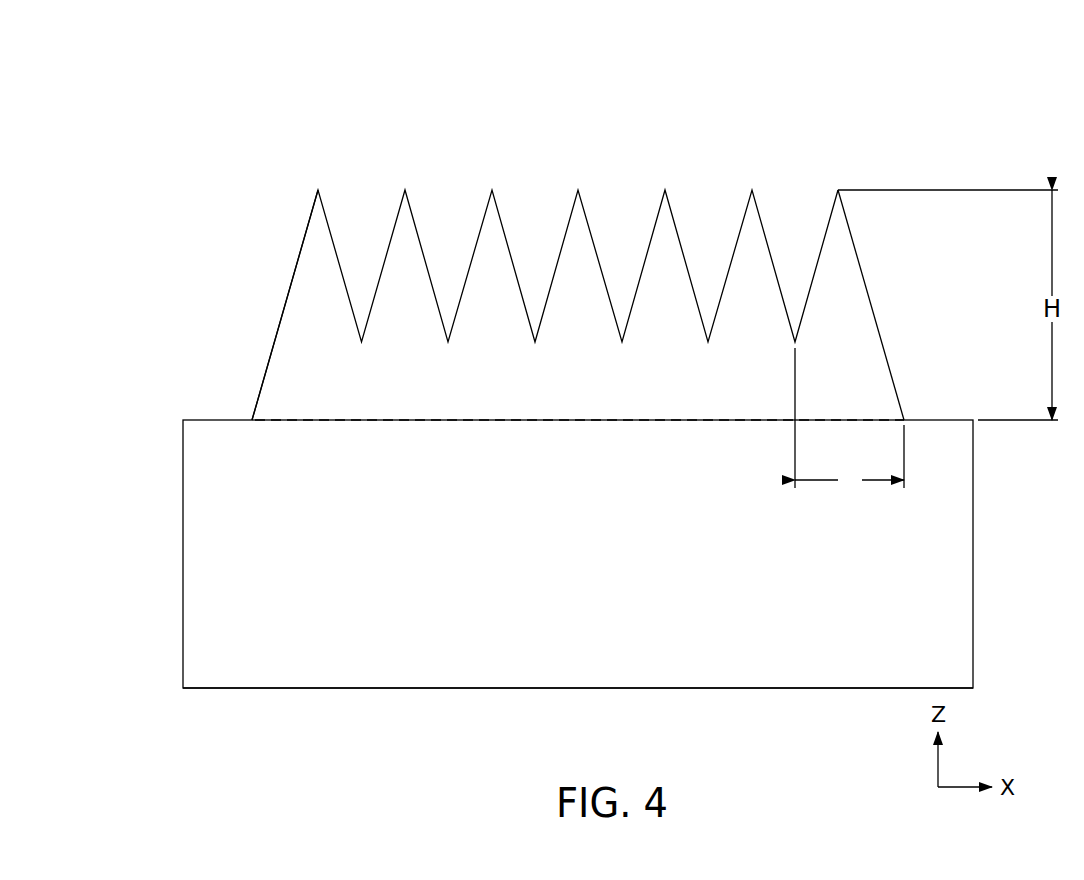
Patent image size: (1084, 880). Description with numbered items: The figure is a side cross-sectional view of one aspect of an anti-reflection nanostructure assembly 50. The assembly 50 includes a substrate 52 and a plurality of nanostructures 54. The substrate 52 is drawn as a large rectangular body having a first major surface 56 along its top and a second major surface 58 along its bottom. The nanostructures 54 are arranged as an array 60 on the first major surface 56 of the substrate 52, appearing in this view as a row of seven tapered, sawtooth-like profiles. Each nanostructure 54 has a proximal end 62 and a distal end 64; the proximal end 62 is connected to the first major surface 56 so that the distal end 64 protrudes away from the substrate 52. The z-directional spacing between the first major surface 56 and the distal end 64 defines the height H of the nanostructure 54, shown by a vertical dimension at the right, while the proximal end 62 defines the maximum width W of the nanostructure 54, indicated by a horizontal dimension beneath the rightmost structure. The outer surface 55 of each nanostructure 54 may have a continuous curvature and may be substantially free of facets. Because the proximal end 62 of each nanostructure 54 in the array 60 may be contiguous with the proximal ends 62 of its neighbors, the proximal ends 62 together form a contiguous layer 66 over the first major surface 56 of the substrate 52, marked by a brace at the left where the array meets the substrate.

The anti-reflection nanostructure assembly 50 is at (830, 112).
The substrate 52 is at (966, 580).
The nanostructures 54 is at (336, 301).
The outer surface 55 is at (862, 260).
The first major surface 56 is at (948, 420).
The second major surface 58 is at (797, 690).
The array 60 is at (278, 195).
The proximal end 62 is at (922, 385).
The distal end 64 is at (856, 200).
The contiguous layer 66 is at (243, 343).